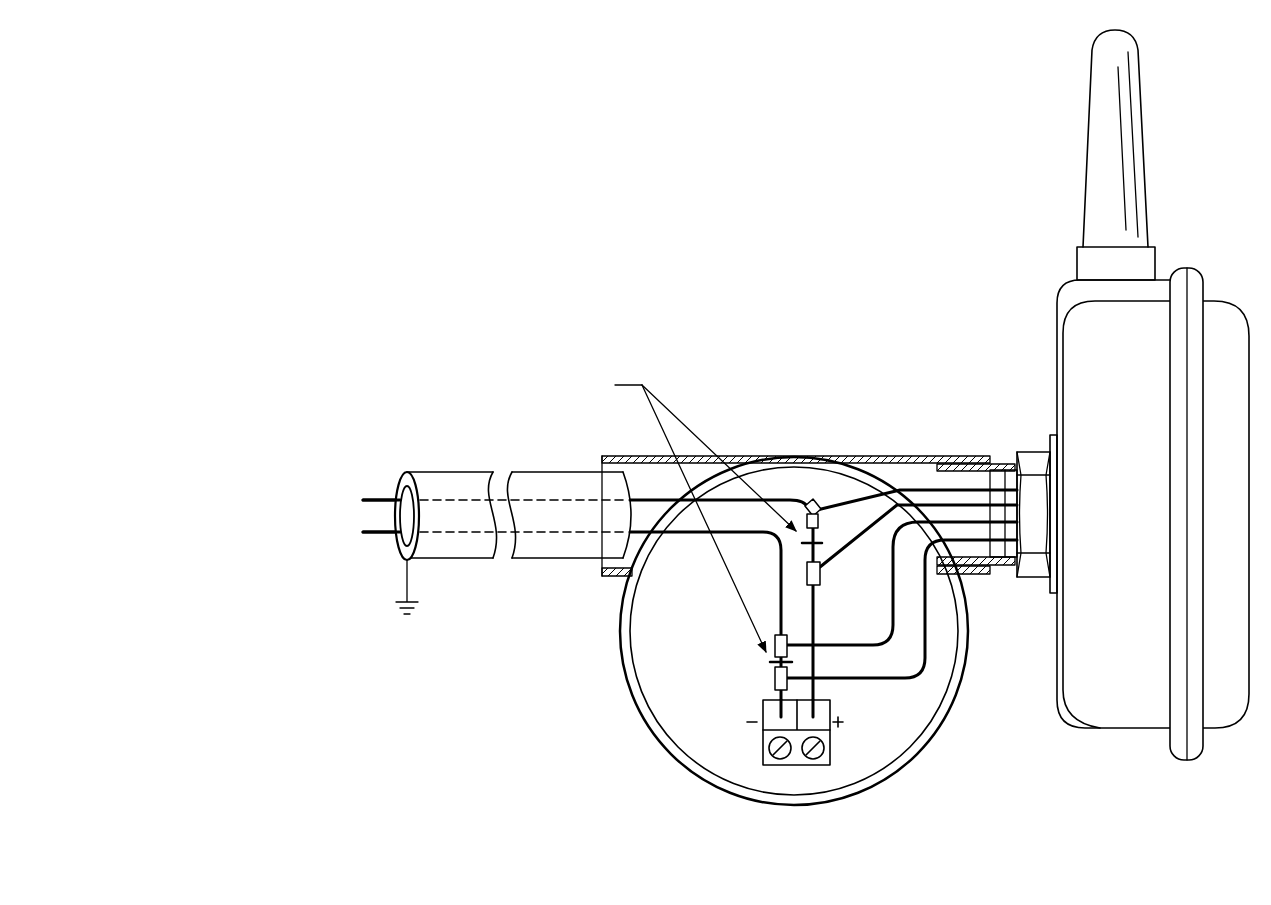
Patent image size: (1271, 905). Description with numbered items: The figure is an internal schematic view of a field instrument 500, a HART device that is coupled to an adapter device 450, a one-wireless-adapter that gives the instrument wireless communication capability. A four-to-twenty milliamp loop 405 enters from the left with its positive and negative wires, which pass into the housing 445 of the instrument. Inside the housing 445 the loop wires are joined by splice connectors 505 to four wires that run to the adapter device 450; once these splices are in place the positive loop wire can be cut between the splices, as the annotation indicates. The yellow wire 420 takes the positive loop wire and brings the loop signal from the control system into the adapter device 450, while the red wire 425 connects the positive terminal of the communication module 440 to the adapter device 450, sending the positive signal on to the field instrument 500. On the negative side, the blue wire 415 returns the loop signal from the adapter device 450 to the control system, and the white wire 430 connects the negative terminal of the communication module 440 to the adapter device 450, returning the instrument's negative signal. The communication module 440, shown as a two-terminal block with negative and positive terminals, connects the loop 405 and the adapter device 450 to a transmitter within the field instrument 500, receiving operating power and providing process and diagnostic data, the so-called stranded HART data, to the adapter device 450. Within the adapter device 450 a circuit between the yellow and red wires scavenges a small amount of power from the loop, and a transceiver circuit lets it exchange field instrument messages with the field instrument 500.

The field instrument 500 is at (460, 290).
The 4-20 mA loop 405 is at (408, 473).
The splice connectors 505 is at (797, 483).
The yellow wire 420 is at (917, 488).
The red wire 425 is at (963, 504).
The blue wire 415 is at (873, 645).
The white wire 430 is at (897, 682).
The communication module 440 is at (763, 748).
The housing 445 is at (620, 628).
The adapter device 450 is at (1134, 544).